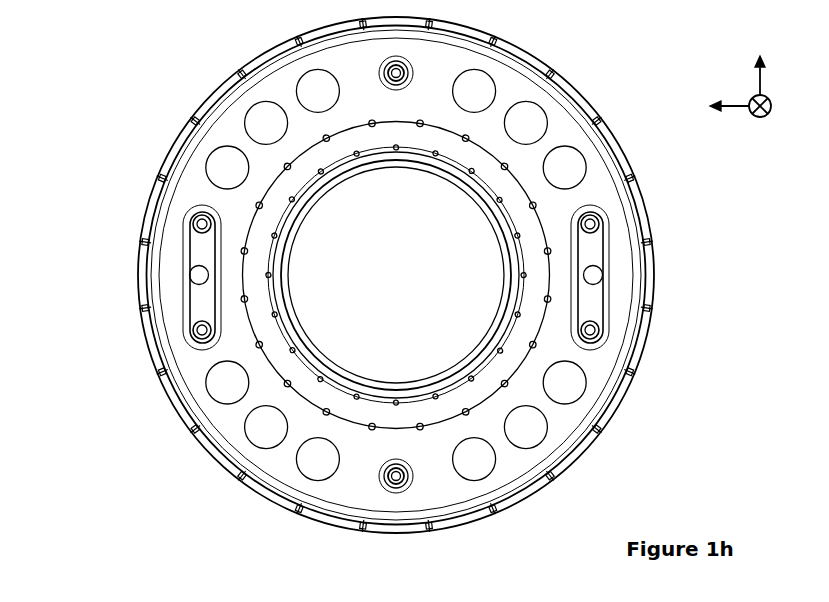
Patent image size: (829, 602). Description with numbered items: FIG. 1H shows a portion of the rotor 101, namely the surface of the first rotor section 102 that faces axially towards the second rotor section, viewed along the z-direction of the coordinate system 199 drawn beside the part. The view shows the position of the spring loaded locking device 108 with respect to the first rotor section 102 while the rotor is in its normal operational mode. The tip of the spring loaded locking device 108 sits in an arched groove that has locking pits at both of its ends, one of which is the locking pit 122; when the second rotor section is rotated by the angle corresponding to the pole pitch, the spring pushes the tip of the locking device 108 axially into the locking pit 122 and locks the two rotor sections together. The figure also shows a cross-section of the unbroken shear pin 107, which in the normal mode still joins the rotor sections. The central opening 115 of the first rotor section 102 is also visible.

The rotor 101 is at (400, 267).
The first rotor section 102 is at (637, 277).
The shear pin 107 is at (404, 71).
The spring loaded locking device 108 is at (198, 275).
The central bore 115 is at (380, 279).
The locking pit 122 is at (203, 219).
The coordinate system 199 is at (740, 83).